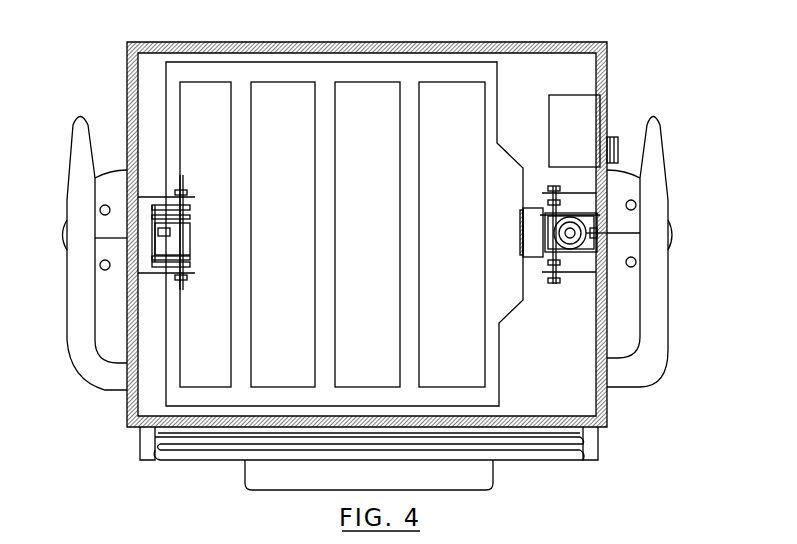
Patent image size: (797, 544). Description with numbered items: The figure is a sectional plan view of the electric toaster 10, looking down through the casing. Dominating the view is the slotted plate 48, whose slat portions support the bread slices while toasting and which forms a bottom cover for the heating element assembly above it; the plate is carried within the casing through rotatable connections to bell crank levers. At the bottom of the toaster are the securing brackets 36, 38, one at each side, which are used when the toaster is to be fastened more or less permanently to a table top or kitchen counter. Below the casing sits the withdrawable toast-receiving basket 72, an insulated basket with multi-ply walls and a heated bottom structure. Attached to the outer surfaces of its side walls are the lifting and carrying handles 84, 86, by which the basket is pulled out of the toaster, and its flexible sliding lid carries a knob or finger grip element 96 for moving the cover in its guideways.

The electric toaster 10 is at (112, 85).
The slotted plate 48 is at (495, 92).
The lifting and carrying handle 84 is at (68, 168).
The lifting and carrying handle 86 is at (657, 186).
The securing bracket 38 is at (96, 298).
The securing bracket 36 is at (607, 300).
The toast-receiving basket 72 is at (573, 467).
The knob or finger grip element 96 is at (495, 476).